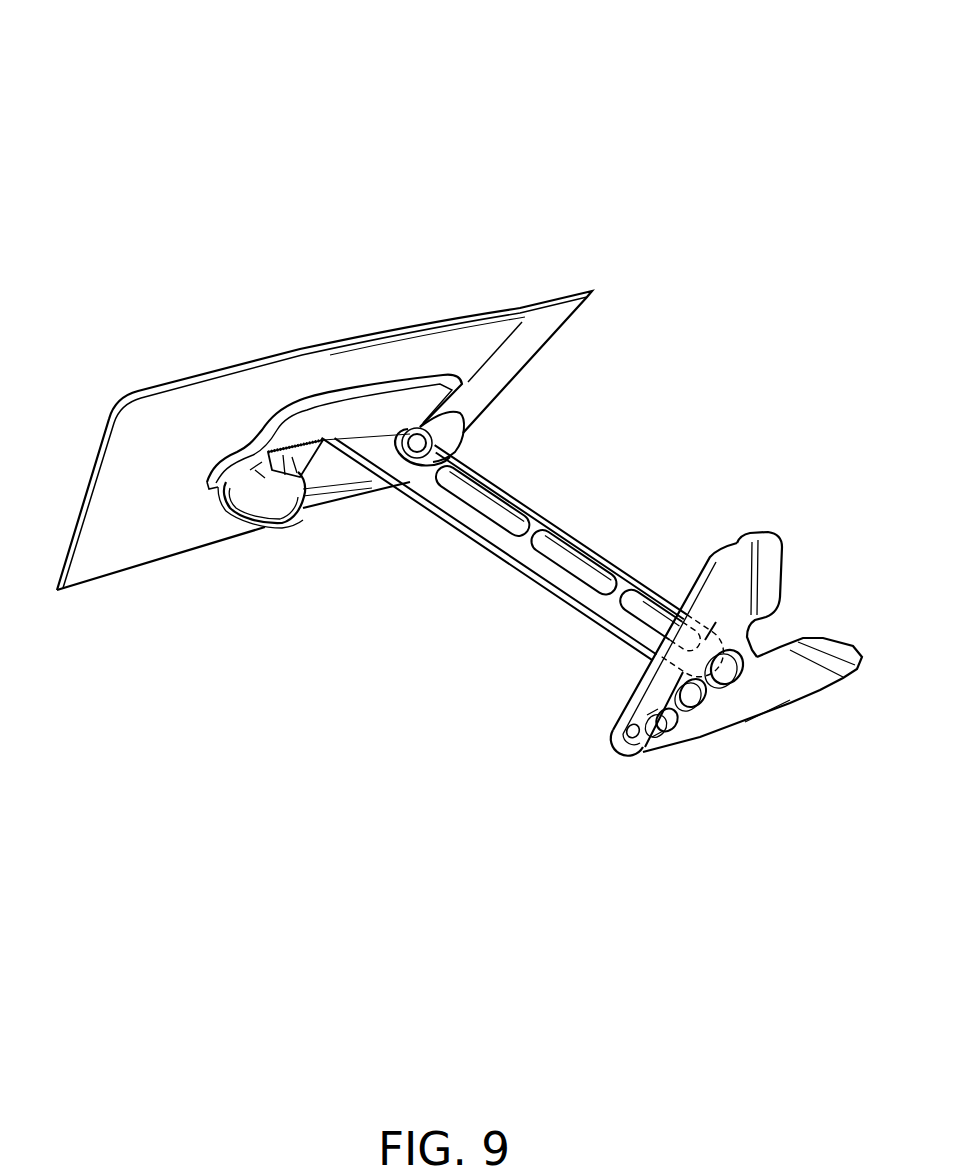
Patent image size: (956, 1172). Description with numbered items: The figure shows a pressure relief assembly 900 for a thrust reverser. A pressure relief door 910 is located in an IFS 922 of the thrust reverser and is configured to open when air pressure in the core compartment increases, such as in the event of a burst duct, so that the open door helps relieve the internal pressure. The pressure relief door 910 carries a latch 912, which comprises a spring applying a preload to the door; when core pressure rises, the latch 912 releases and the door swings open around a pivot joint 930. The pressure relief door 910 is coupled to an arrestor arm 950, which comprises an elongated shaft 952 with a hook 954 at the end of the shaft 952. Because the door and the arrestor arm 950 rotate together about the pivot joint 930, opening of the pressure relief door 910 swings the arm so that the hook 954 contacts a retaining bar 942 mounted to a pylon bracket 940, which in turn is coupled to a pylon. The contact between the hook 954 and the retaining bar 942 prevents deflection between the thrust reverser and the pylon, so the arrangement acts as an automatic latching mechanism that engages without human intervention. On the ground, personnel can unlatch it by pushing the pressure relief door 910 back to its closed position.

The pressure relief assembly 900 is at (311, 148).
The pressure relief door 910 is at (333, 473).
The latch 912 is at (268, 527).
The IFS 922 is at (187, 373).
The pivot joint 930 is at (470, 435).
The pylon bracket 940 is at (747, 533).
The retaining bar 942 is at (640, 752).
The arrestor arm 950 is at (602, 522).
The elongated shaft 952 is at (500, 576).
The hook 954 is at (763, 722).